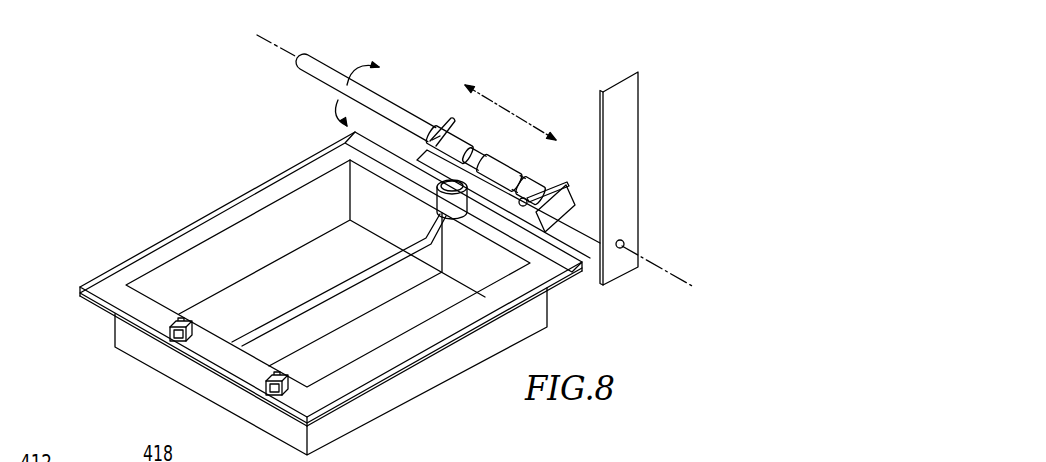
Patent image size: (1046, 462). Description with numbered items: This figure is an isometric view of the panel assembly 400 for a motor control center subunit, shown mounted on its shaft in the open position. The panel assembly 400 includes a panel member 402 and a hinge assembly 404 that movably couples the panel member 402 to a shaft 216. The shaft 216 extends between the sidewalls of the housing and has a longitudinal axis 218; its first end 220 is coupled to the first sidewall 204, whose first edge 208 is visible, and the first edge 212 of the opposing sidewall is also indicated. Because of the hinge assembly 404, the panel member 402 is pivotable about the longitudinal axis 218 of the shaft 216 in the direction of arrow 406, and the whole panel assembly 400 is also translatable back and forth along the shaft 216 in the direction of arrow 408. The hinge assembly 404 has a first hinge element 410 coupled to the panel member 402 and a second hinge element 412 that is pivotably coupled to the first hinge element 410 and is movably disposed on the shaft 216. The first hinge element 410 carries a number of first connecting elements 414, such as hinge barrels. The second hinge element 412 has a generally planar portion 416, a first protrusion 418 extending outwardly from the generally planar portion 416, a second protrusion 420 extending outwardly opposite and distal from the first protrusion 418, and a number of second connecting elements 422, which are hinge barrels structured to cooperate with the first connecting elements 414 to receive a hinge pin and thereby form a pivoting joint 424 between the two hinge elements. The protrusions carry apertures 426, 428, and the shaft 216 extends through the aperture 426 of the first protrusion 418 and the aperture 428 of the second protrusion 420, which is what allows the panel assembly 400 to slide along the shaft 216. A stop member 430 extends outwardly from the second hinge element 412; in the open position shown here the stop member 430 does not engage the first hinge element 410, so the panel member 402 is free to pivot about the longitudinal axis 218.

The panel assembly 400 is at (63, 330).
The panel member 402 is at (256, 198).
The hinge assembly 404 is at (567, 148).
The arrow 406 is at (338, 89).
The arrow 408 is at (502, 100).
The first hinge element 410 is at (507, 207).
The second hinge element 412 is at (578, 177).
The first connecting elements 414 is at (437, 213).
The generally planar portion 416 is at (533, 227).
The first protrusion 418 is at (568, 183).
The second protrusion 420 is at (453, 124).
The second connecting elements 422 is at (450, 142).
The pivoting joint 424 is at (603, 232).
The aperture 426 is at (543, 214).
The aperture 428 is at (448, 127).
The stop member 430 is at (491, 172).
The first sidewall 204 is at (633, 141).
The first edge 208 is at (640, 72).
The first edge 212 is at (647, 242).
The shaft 216 is at (300, 64).
The longitudinal axis 218 is at (664, 268).
The first end 220 is at (592, 250).